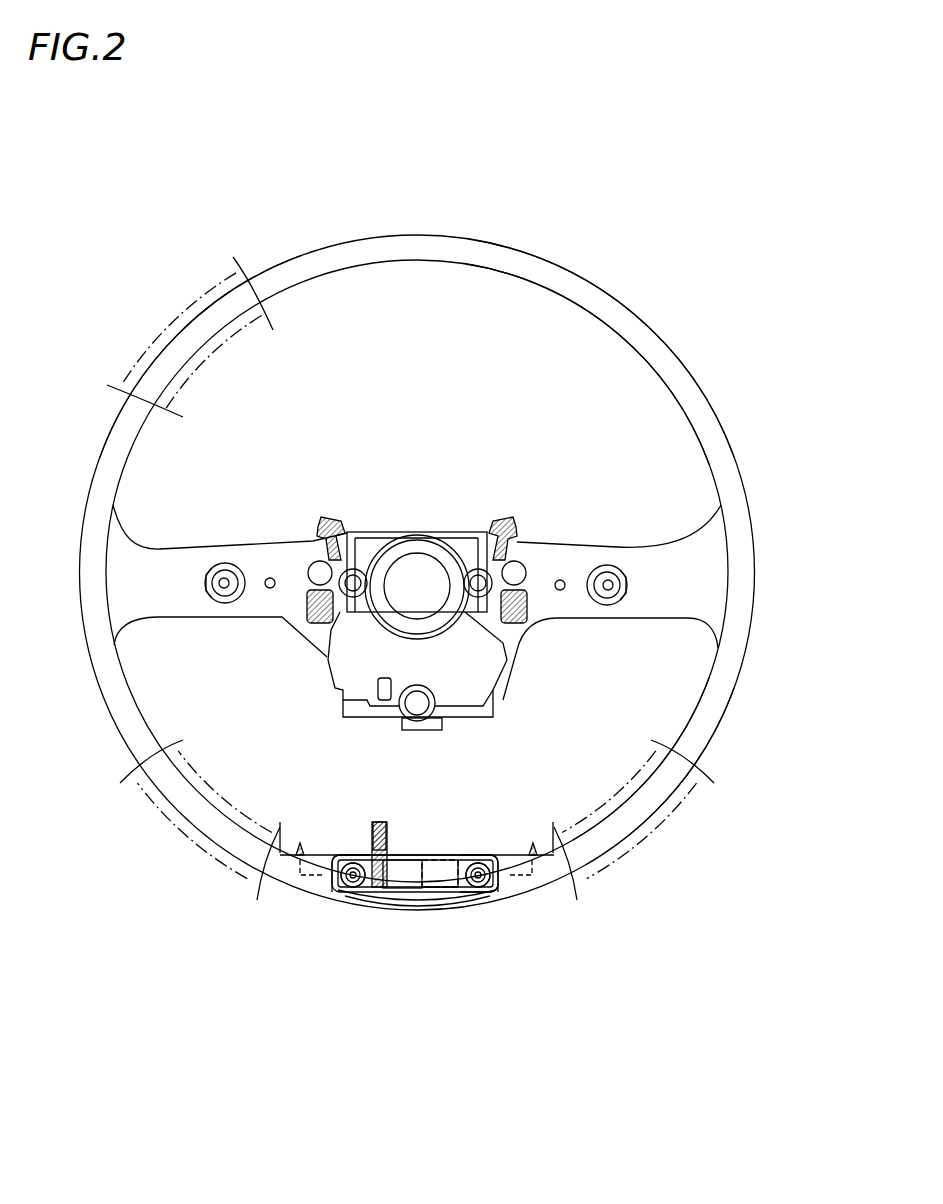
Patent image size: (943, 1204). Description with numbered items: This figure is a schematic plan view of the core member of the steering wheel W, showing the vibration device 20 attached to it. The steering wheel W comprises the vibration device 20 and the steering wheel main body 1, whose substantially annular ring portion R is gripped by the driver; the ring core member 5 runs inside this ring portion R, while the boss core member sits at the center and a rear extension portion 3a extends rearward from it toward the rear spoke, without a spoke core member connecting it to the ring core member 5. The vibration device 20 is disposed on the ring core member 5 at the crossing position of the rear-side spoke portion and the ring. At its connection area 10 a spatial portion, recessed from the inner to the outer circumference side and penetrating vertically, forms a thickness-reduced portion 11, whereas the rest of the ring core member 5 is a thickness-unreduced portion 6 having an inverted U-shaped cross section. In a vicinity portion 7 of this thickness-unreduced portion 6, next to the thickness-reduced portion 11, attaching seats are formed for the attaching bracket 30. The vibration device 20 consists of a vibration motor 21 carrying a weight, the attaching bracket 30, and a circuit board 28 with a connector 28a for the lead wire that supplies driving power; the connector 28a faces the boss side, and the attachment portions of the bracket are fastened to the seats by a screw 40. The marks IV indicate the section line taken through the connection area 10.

The steering wheel main body 1 is at (573, 220).
The ring core member 5 is at (612, 312).
The thickness-unreduced portion 6 is at (698, 735).
The steering wheel W is at (168, 222).
The ring portion R is at (160, 343).
The rear extension portion 3a is at (503, 697).
The connection area 10 is at (417, 930).
The thickness-reduced portion 11 is at (380, 900).
The vibration device 20 is at (427, 897).
The vibration motor 21 is at (400, 883).
The circuit board 28 is at (387, 840).
The connector 28a is at (380, 820).
The attaching bracket 30 is at (440, 883).
The screw 40 is at (352, 883).
The vicinity portion 7 is at (505, 890).
The section line IV is at (416, 842).